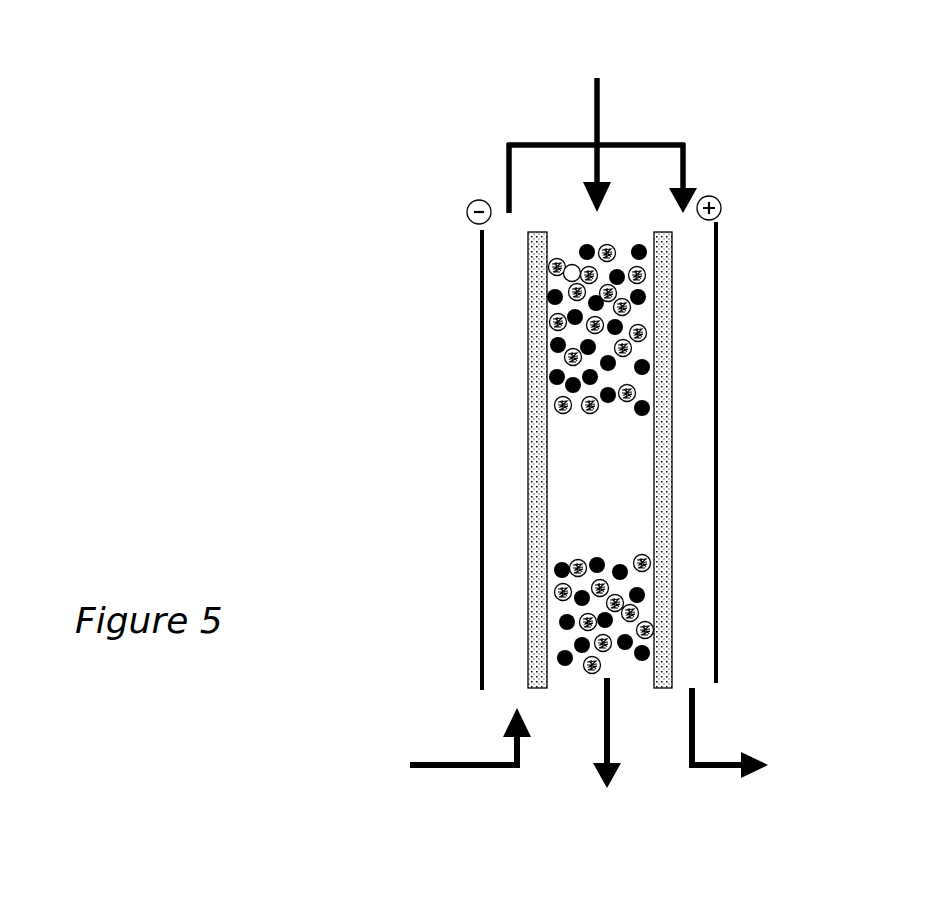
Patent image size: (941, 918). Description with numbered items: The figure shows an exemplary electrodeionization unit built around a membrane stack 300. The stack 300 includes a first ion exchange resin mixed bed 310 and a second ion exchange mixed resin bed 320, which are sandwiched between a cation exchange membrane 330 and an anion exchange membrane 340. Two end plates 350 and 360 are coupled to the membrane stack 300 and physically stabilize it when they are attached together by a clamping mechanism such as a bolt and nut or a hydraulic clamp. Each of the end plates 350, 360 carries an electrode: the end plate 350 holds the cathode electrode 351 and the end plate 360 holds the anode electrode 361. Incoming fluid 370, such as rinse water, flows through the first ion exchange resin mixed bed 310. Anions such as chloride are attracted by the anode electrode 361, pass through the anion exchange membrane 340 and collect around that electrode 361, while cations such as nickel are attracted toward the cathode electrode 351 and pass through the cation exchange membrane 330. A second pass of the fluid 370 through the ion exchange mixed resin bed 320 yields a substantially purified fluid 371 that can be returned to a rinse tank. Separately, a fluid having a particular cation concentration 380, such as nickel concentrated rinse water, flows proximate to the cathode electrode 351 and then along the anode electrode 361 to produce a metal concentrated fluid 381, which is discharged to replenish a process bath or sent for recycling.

The membrane stack 300 is at (812, 159).
The first ion exchange resin mixed bed 310 is at (623, 453).
The ion exchange mixed resin bed 320 is at (625, 544).
The cation exchange membrane 330 is at (528, 671).
The anion exchange membrane 340 is at (683, 653).
The end plate 350 is at (463, 469).
The cathode electrode 351 is at (454, 229).
The end plate 360 is at (828, 515).
The anode electrode 361 is at (740, 221).
The incoming fluid 370 is at (613, 79).
The substantially purified fluid 371 is at (632, 860).
The fluid having a particular cation concentration 380 is at (365, 861).
The metal concentrated fluid 381 is at (810, 858).